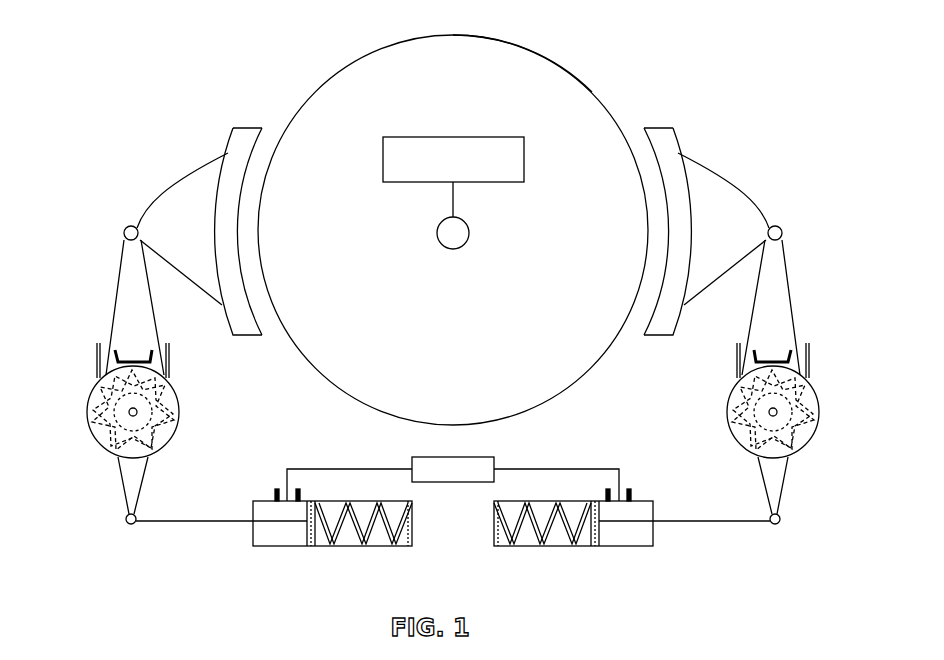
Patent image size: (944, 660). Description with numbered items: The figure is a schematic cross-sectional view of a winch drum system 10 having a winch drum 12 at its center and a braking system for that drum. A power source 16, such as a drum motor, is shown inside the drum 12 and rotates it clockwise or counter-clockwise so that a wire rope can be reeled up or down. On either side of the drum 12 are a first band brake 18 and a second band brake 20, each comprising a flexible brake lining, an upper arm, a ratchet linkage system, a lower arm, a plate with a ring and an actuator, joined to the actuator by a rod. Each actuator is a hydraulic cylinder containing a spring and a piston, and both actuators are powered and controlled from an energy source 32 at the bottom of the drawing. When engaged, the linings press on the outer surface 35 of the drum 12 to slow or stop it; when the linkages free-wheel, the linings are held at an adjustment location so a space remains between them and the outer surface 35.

The winch drum system 10 is at (175, 40).
The winch drum 12 is at (363, 72).
The power source 16 is at (435, 137).
The first band brake 18 is at (127, 527).
The second band brake 20 is at (779, 527).
The energy source 32 is at (410, 460).
The outer surface 35 is at (518, 43).